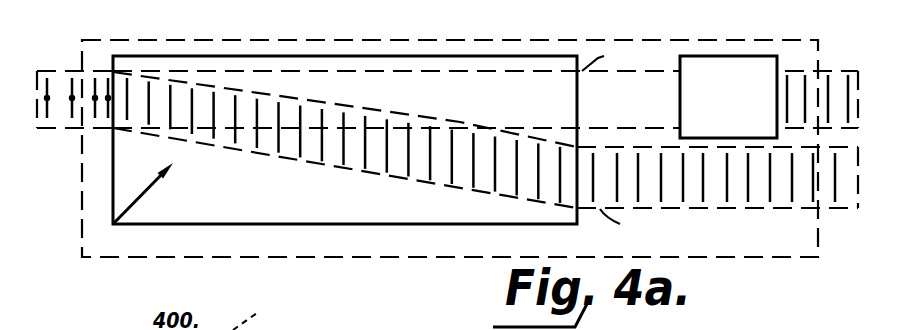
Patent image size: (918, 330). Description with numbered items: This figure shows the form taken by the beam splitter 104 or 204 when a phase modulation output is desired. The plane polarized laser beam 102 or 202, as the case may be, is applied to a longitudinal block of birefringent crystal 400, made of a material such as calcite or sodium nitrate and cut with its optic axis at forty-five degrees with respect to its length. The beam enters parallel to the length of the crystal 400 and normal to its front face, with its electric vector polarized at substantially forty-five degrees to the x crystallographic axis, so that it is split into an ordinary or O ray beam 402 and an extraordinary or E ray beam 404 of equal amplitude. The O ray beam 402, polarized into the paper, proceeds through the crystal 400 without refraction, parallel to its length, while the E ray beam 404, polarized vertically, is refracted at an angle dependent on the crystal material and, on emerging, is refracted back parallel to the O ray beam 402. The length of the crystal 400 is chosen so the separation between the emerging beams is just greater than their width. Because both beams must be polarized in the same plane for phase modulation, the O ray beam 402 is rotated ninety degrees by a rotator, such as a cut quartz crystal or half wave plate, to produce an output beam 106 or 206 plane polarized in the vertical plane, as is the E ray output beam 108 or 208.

The plane polarized laser beam 102 is at (93, 67).
The plane polarized laser beam 202 is at (60, 70).
The beam splitter 104 is at (447, 152).
The beam splitter 204 is at (447, 152).
The output beam 106 is at (820, 61).
The output beam 206 is at (834, 71).
The E ray output beam 108 is at (717, 226).
The E ray output beam 208 is at (856, 209).
The birefringent crystal 400 is at (345, 135).
The O ray beam 402 is at (258, 74).
The E ray beam 404 is at (289, 158).